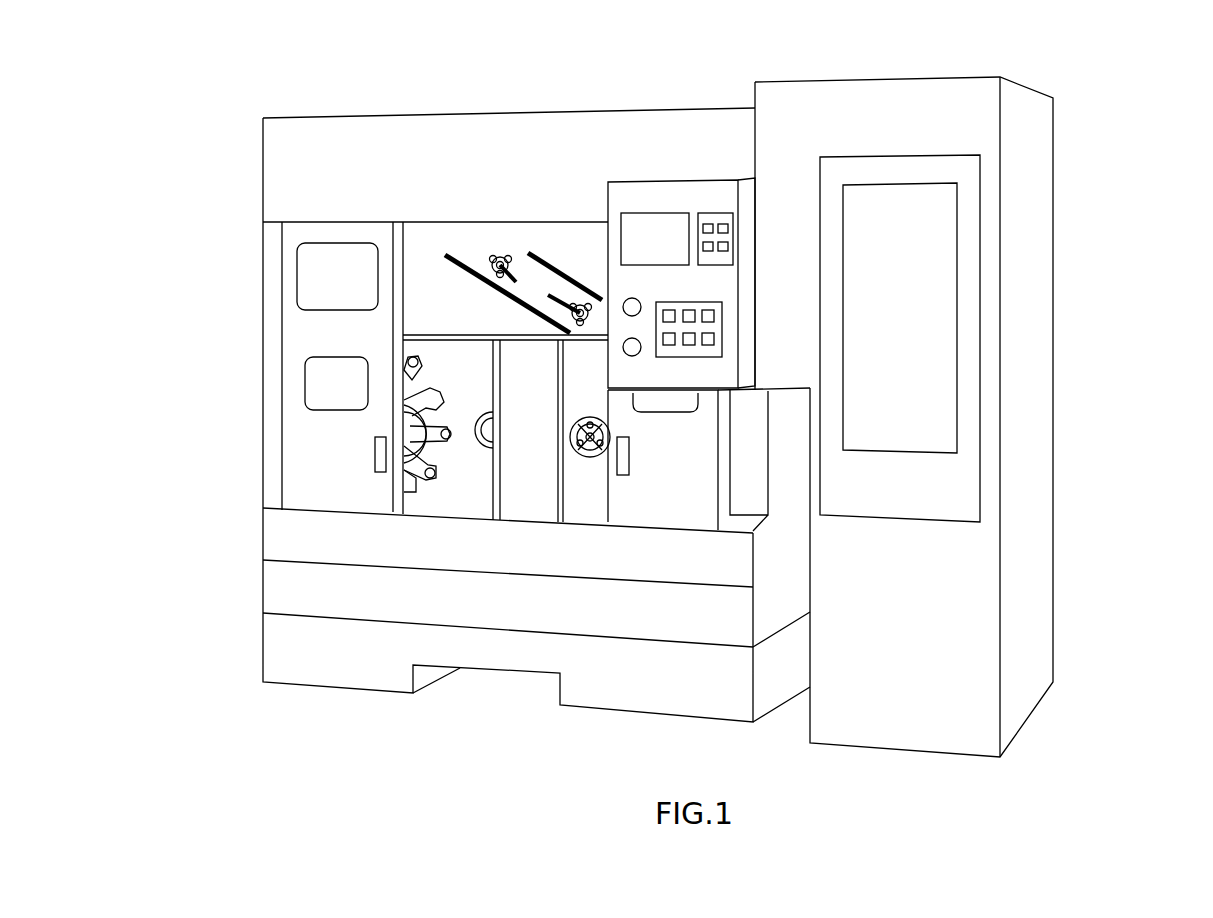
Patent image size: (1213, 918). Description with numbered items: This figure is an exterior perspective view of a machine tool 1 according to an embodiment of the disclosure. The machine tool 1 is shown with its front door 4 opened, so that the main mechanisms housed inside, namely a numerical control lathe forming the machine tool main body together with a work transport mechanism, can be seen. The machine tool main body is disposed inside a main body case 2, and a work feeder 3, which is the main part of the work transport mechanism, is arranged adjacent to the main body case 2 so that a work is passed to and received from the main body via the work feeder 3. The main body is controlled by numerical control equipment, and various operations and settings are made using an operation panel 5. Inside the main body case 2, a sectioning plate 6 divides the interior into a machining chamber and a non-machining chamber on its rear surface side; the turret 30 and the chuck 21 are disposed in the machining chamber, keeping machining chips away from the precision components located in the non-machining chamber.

The machine tool 1 is at (612, 90).
The main body case 2 is at (264, 338).
The work feeder 3 is at (1040, 258).
The front door 4 is at (380, 232).
The operation panel 5 is at (698, 200).
The sectioning plate 6 is at (578, 370).
The chuck 21 is at (483, 455).
The turret 30 is at (413, 490).